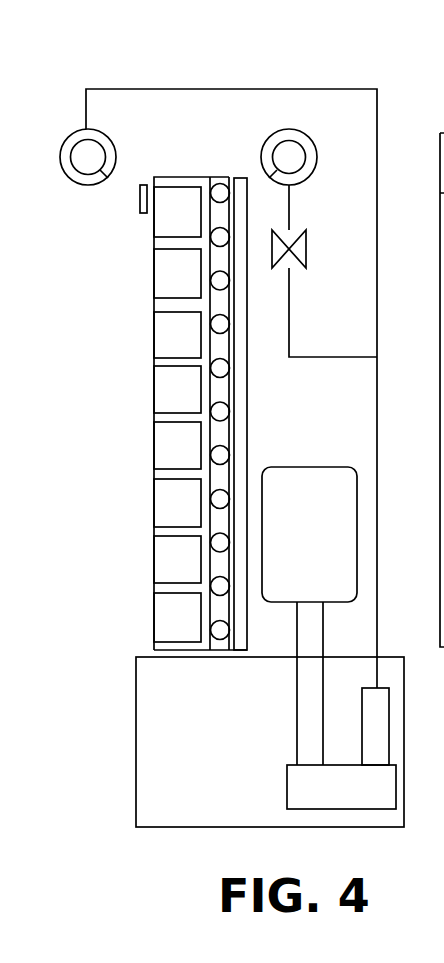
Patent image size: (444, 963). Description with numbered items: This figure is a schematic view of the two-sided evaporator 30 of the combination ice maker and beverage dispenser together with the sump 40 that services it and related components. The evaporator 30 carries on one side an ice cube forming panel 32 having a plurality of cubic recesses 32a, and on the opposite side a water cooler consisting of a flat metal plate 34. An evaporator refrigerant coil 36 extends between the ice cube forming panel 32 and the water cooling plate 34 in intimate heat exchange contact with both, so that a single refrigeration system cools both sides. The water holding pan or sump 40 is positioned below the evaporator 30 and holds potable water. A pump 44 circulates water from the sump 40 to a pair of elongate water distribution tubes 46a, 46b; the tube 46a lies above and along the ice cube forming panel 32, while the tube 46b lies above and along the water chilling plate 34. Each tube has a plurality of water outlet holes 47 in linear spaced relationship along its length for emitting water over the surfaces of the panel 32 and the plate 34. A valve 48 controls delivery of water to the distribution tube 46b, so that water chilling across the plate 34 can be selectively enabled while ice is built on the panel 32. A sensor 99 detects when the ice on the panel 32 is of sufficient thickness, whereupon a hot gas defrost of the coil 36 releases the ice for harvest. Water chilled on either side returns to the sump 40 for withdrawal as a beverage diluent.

The ice making and water cooling evaporator 30 is at (220, 178).
The ice cube forming panel 32 is at (153, 303).
The cubic recesses 32a is at (1, 497).
The flat metal plate 34 is at (248, 408).
The evaporator refrigerant coil 36 is at (215, 236).
The sump 40 is at (135, 742).
The pump 44 is at (309, 616).
The water distribution tube 46a is at (72, 133).
The water distribution tube 46b is at (312, 137).
The water outlet holes 47 is at (108, 179).
The valve 48 is at (308, 244).
The sensor 99 is at (139, 200).